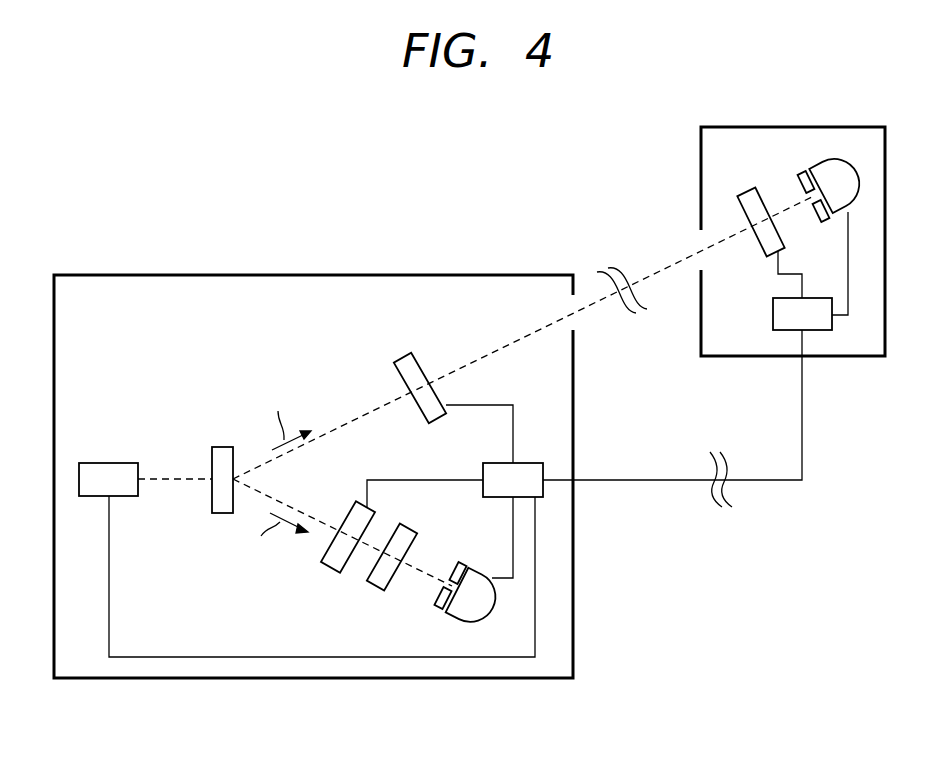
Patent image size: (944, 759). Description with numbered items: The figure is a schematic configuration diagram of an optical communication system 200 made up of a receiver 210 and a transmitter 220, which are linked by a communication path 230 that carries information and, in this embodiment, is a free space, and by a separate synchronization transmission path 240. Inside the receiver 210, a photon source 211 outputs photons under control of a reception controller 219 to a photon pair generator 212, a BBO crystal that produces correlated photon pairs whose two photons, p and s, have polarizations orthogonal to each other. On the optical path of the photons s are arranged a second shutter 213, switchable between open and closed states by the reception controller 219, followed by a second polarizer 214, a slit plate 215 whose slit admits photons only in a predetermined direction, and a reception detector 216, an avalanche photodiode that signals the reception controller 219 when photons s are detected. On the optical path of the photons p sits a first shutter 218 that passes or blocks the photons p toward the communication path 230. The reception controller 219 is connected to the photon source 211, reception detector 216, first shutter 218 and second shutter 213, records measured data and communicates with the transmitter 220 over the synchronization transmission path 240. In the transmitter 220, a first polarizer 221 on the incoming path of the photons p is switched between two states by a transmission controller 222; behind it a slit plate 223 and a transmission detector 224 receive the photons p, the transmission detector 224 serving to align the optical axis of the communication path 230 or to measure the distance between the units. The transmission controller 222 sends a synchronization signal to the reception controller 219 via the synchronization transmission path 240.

The optical communication system 200 is at (88, 123).
The receiver 210 is at (145, 275).
The photon source 211 is at (118, 463).
The photon pair generator 212 is at (222, 447).
The second shutter 213 is at (325, 570).
The second polarizer 214 is at (372, 591).
The slit plate 215 is at (434, 611).
The reception detector 216 is at (463, 624).
The first shutter 218 is at (405, 355).
The reception controller 219 is at (545, 468).
The transmitter 220 is at (805, 127).
The first polarizer 221 is at (737, 193).
The transmission controller 222 is at (787, 332).
The slit plate 223 is at (800, 172).
The transmission detector 224 is at (843, 163).
The communication path 230 is at (647, 277).
The synchronization transmission path 240 is at (648, 482).